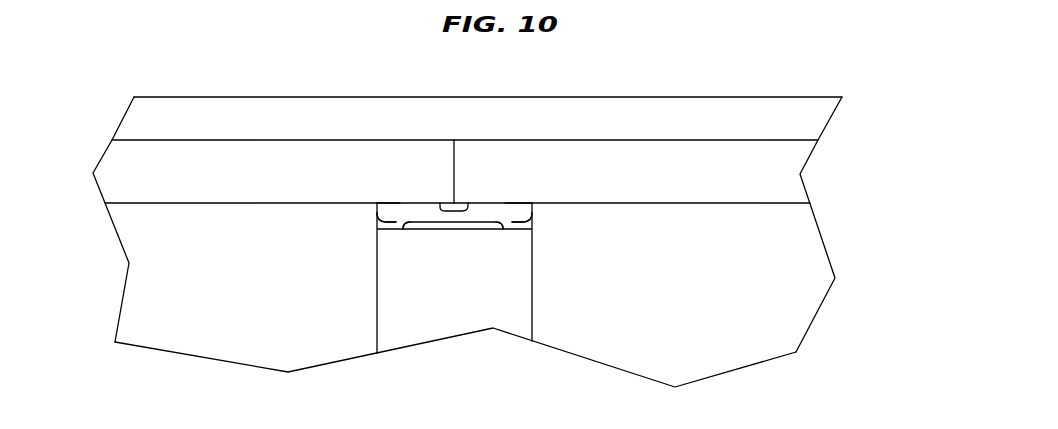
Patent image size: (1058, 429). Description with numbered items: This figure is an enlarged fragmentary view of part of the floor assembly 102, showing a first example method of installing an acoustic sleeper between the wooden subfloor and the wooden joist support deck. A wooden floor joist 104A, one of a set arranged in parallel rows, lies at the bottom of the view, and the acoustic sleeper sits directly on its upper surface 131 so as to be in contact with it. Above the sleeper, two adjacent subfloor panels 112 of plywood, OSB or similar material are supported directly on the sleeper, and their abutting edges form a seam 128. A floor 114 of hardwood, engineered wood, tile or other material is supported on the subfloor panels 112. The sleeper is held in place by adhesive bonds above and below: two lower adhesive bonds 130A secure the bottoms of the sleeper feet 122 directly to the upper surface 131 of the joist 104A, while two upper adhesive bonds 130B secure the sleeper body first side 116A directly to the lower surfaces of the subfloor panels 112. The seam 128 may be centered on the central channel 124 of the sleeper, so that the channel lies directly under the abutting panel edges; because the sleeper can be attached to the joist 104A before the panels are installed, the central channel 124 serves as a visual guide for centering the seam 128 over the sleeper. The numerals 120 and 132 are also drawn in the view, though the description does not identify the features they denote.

The floor assembly 102 is at (872, 196).
The wooden floor joist 104A is at (533, 253).
The subfloor panel 112 is at (203, 140).
The floor 114 is at (680, 97).
The sleeper body first side 116A is at (522, 203).
The gap 120 is at (523, 212).
The sleeper feet 122 is at (395, 222).
The central channel 124 is at (459, 212).
The seam 128 is at (454, 155).
The lower adhesive bond 130A is at (403, 226).
The upper adhesive bond 130B is at (400, 203).
The upper surface of the wooden floor joist 131 is at (432, 226).
The support body 132 is at (222, 203).